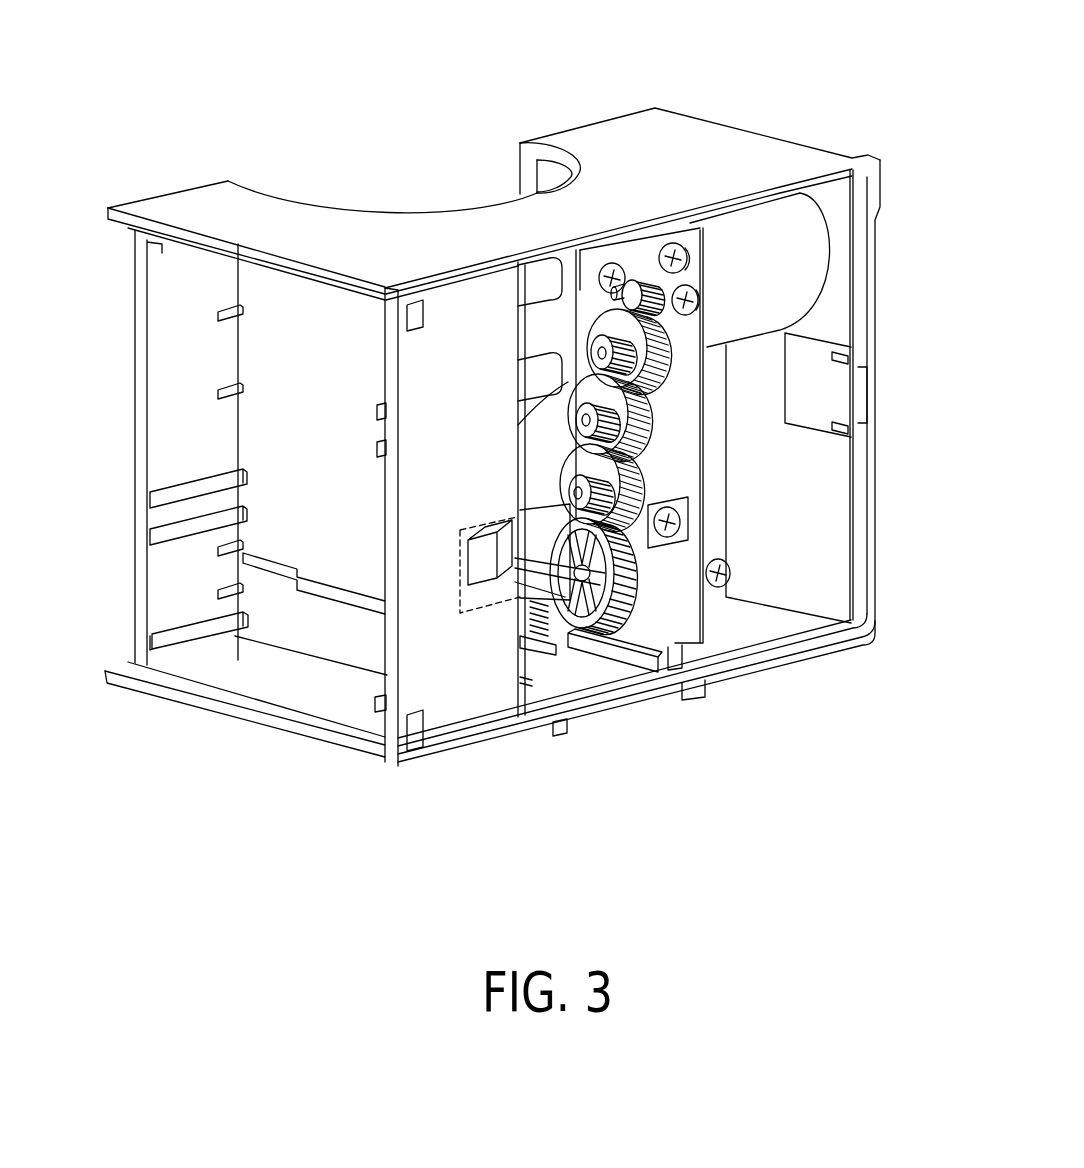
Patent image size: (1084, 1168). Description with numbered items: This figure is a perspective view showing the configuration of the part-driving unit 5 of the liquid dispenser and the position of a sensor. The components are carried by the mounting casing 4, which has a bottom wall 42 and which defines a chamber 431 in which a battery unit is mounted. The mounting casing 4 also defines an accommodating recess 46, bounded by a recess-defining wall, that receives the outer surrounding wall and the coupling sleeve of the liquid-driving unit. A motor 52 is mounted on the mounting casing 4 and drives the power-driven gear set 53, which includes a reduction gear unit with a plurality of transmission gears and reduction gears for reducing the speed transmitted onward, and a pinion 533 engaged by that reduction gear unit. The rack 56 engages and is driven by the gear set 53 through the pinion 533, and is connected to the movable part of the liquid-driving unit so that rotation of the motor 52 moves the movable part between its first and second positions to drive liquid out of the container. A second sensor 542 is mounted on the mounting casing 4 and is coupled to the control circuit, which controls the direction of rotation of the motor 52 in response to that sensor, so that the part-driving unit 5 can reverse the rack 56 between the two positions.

The mounting casing 4 is at (688, 101).
The accommodating recess 46 is at (547, 178).
The chamber 431 is at (273, 362).
The bottom wall 42 is at (513, 733).
The part-driving unit 5 is at (668, 593).
The motor 52 is at (778, 267).
The gear set 53 is at (672, 415).
The pinion 533 is at (623, 595).
The second sensor 542 is at (488, 518).
The rack 56 is at (545, 648).